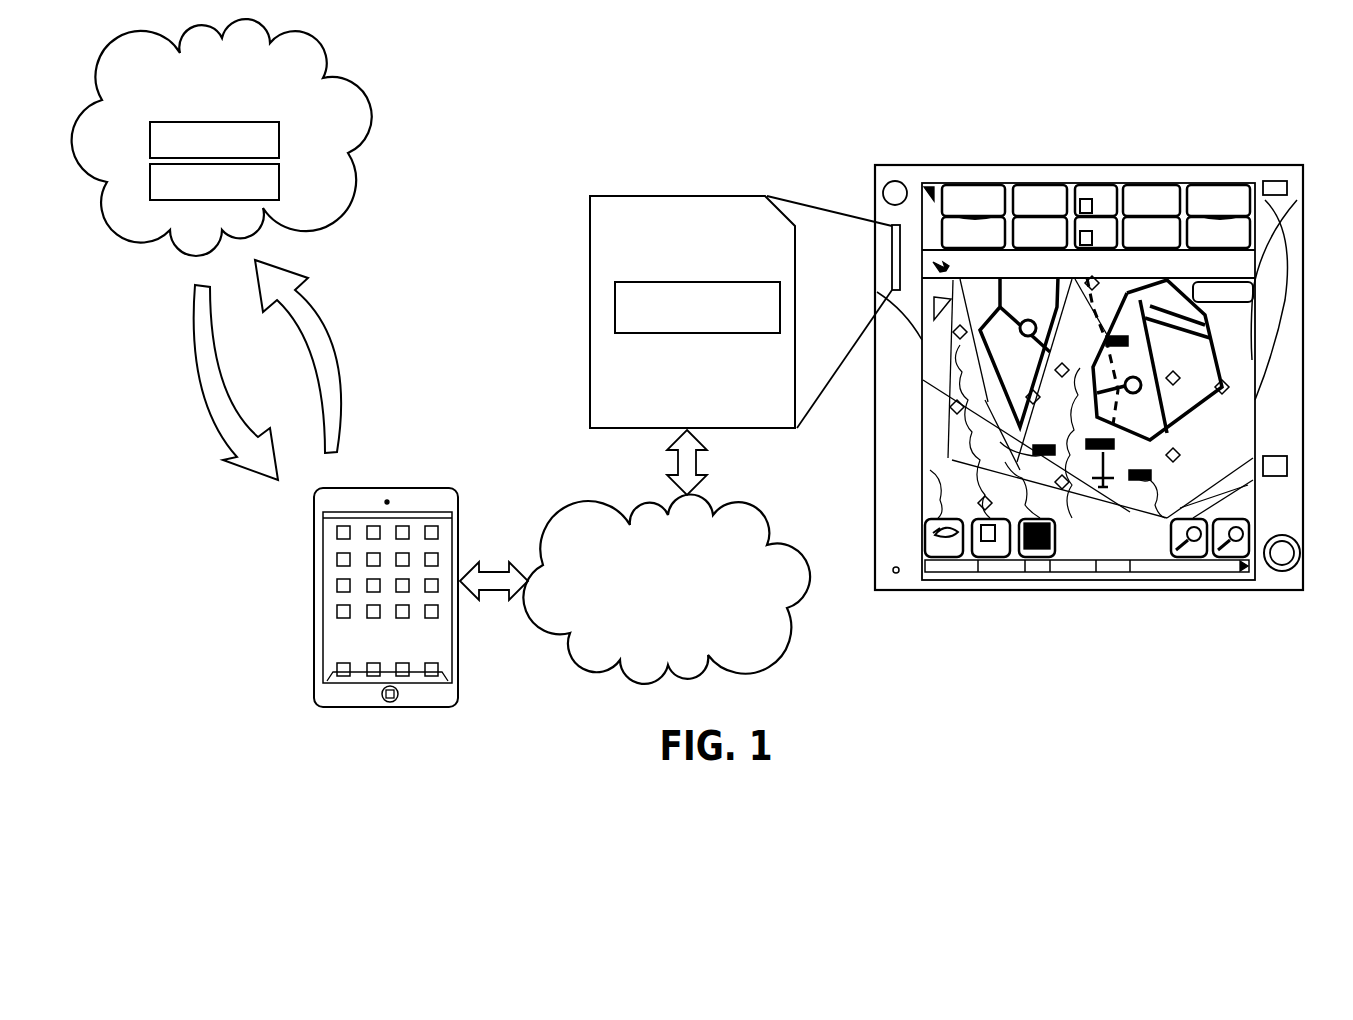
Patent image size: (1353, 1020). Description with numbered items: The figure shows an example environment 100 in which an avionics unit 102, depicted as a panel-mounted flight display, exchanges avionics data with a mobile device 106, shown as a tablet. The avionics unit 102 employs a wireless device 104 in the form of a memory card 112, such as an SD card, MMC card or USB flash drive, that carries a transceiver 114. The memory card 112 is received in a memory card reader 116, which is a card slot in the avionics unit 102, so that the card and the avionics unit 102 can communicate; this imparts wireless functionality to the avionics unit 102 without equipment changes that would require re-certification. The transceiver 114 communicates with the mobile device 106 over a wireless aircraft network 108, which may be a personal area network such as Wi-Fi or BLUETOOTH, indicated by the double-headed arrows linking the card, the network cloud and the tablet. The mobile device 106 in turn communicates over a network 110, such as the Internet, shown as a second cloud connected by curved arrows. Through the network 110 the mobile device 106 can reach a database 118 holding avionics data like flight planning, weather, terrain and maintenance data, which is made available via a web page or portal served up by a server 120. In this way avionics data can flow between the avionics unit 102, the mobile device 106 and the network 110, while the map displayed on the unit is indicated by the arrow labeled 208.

The environment 100 is at (681, 62).
The avionics unit 102 is at (1040, 165).
The wireless device 104 is at (610, 196).
The mobile device 106 is at (313, 635).
The wireless aircraft network 108 is at (666, 589).
The network 110 is at (222, 137).
The memory card 112 is at (686, 196).
The transceiver 114 is at (702, 282).
The memory card reader 116 is at (892, 250).
The database 118 is at (281, 138).
The server 120 is at (281, 181).
The flight plan map display 208 is at (1228, 342).